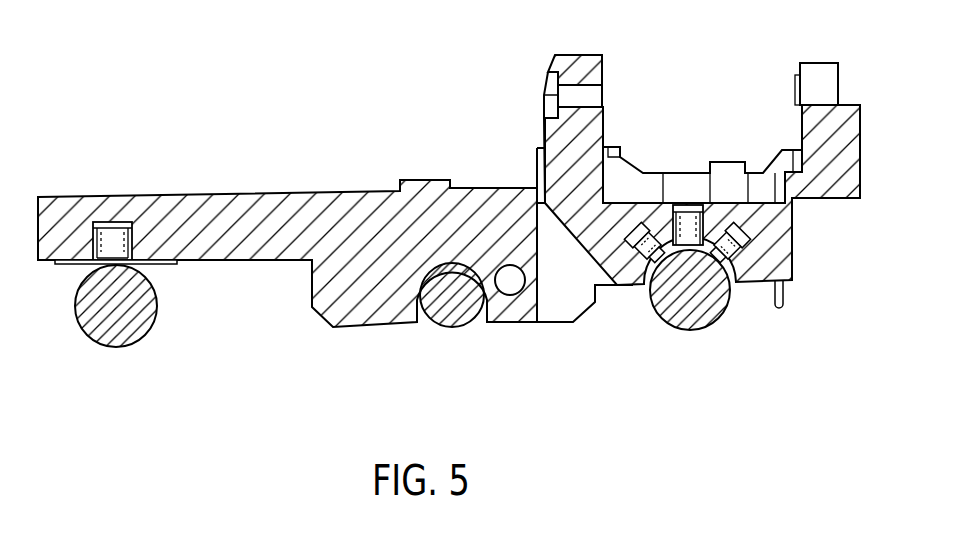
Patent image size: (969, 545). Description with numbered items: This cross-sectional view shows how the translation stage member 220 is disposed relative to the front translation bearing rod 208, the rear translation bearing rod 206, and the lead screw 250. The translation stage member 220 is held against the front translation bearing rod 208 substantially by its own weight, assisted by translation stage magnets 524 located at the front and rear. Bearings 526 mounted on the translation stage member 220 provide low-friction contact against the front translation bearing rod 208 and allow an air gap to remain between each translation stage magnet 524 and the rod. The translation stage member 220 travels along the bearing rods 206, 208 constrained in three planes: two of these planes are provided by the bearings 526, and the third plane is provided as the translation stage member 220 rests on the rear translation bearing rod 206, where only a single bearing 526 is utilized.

The translation stage member 220 is at (280, 191).
The rear translation bearing rod 206 is at (133, 342).
The lead screw 250 is at (450, 330).
The front translation bearing rod 208 is at (706, 328).
The translation stage magnet 524 is at (117, 222).
The bearing 526 is at (70, 265).